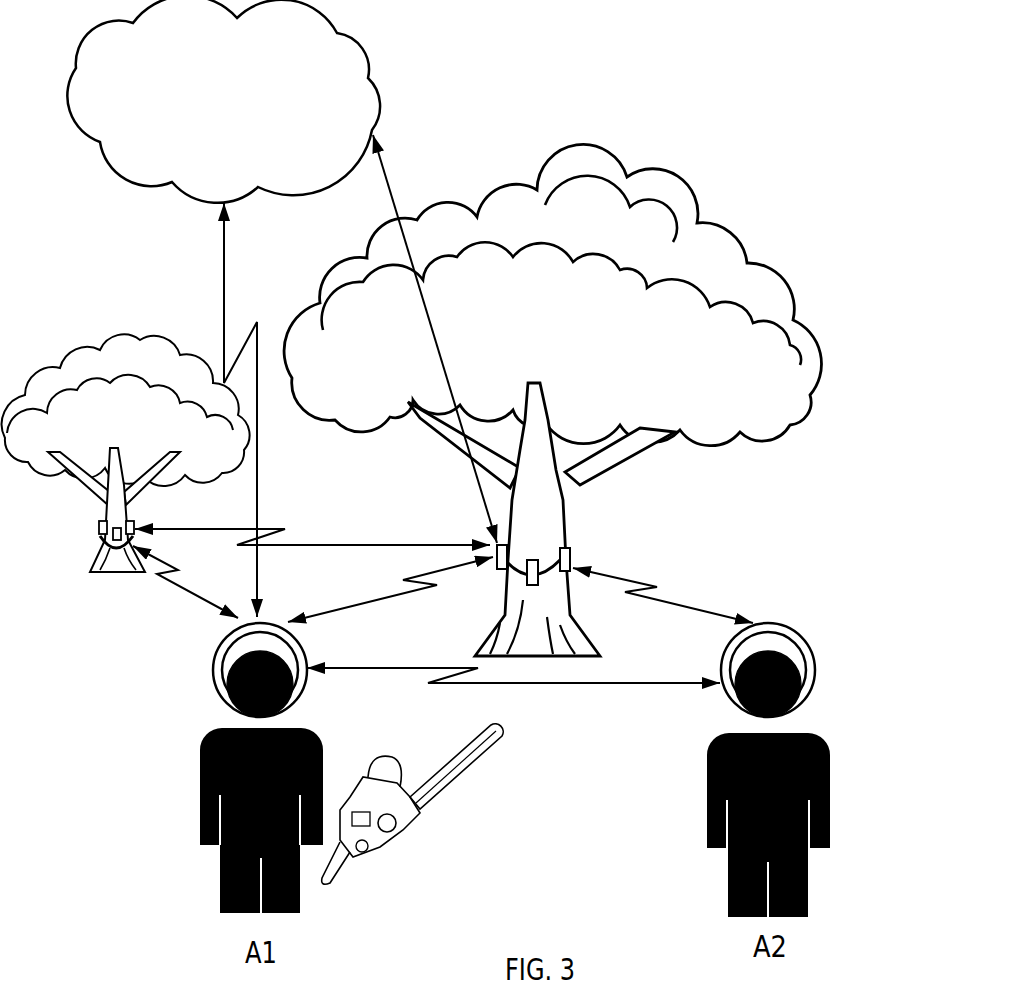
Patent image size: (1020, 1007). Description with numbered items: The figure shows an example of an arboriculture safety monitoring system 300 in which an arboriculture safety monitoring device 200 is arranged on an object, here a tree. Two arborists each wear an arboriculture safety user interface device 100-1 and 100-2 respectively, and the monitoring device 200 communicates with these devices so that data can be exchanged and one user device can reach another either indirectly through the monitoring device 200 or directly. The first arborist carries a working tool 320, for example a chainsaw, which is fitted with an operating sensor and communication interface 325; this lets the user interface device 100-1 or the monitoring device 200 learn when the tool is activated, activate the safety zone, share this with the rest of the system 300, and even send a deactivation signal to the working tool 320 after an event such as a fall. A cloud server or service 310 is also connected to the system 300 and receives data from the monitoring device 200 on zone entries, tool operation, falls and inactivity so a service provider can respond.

The arboriculture safety monitoring system 300 is at (676, 139).
The cloud server or service 310 is at (223, 101).
The arboriculture safety monitoring device 200 is at (570, 566).
The arboriculture safety user interface device 100-1 is at (216, 652).
The arboriculture safety user interface device 100-2 is at (812, 650).
The working tool 320 is at (413, 816).
The communication interface 325 is at (413, 820).